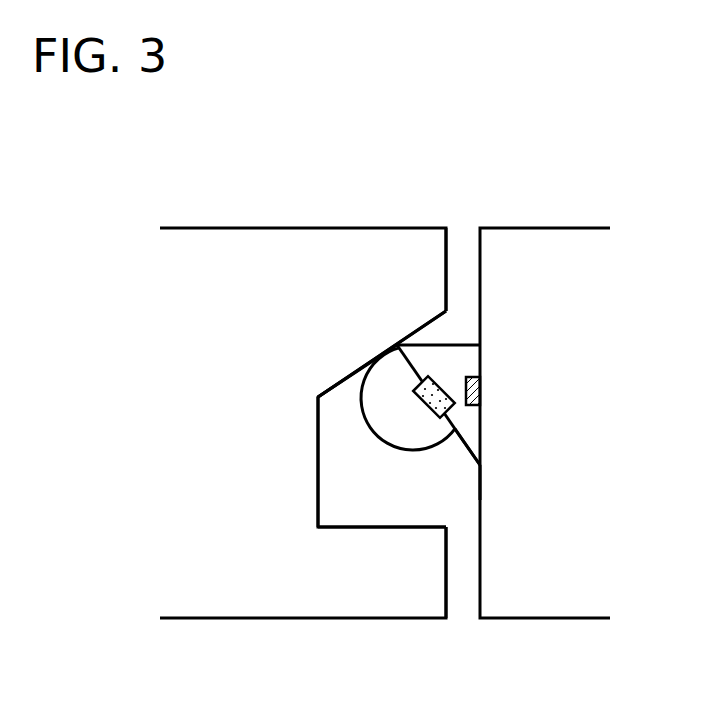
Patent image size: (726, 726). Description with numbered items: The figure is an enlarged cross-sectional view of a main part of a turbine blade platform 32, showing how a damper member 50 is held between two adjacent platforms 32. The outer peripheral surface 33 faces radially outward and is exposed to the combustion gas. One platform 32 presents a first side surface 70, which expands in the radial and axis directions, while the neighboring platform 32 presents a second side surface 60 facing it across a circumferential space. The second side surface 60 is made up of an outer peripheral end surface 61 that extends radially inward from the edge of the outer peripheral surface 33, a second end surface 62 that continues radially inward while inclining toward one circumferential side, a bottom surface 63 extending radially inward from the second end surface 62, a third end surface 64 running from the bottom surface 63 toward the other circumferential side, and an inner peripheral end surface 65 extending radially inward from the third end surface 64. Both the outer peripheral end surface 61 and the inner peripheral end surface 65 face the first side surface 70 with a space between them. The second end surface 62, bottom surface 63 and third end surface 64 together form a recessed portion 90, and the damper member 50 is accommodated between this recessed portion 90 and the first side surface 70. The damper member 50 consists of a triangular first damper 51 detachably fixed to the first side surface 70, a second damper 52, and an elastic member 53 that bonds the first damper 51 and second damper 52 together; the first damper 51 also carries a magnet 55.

The platform 32 is at (203, 590).
The outer peripheral surface 33 is at (212, 228).
The damper member 50 is at (481, 347).
The first damper 51 is at (472, 425).
The second damper 52 is at (385, 432).
The elastic member 53 is at (434, 411).
The magnet 55 is at (482, 388).
The second side surface 60 is at (452, 248).
The outer peripheral end surface 61 is at (447, 270).
The second end surface 62 is at (421, 336).
The bottom surface 63 is at (316, 410).
The third end surface 64 is at (330, 526).
The inner peripheral end surface 65 is at (447, 579).
The first side surface 70 is at (484, 479).
The recessed portion 90 is at (342, 385).